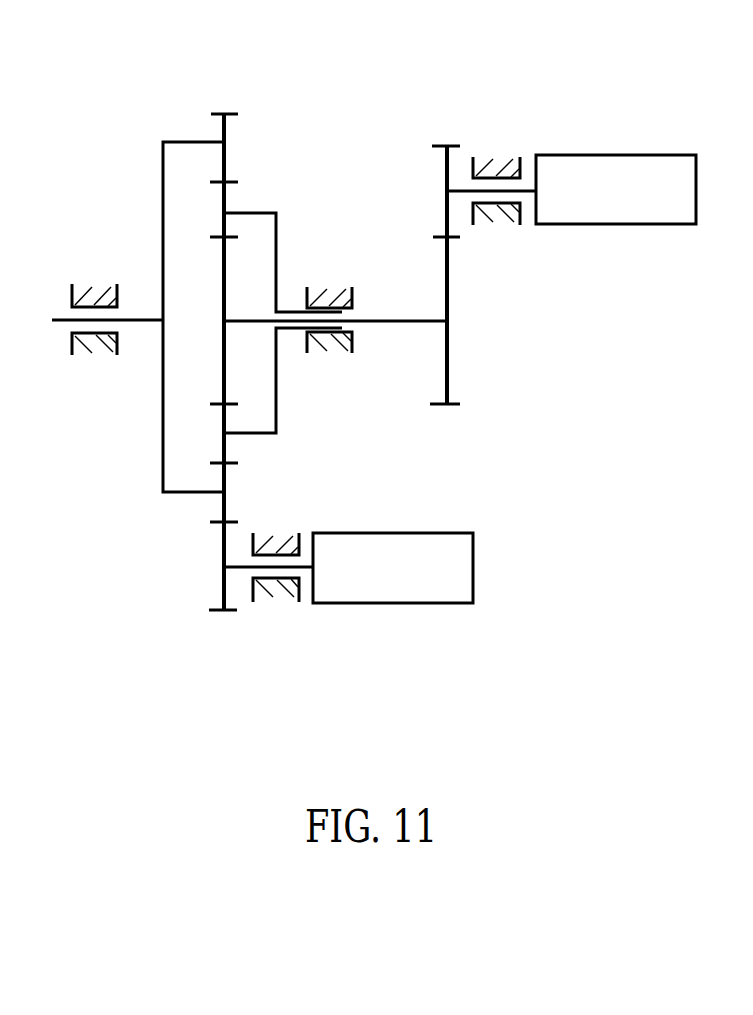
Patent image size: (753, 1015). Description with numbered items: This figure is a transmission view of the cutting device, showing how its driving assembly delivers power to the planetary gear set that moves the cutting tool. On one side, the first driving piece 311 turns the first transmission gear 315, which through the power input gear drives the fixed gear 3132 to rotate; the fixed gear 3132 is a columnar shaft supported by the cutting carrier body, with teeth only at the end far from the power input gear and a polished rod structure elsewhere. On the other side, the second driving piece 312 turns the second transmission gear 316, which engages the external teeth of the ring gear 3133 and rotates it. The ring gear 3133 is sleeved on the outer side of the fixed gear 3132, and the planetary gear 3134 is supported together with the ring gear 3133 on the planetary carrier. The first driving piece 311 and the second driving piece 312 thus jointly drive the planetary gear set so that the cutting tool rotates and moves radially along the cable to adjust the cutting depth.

The first driving piece 311 is at (610, 163).
The second driving piece 312 is at (397, 573).
The first transmission gear 315 is at (449, 142).
The second transmission gear 316 is at (223, 587).
The fixed gear 3132 is at (448, 350).
The ring gear 3133 is at (223, 133).
The planetary gear 3134 is at (225, 193).